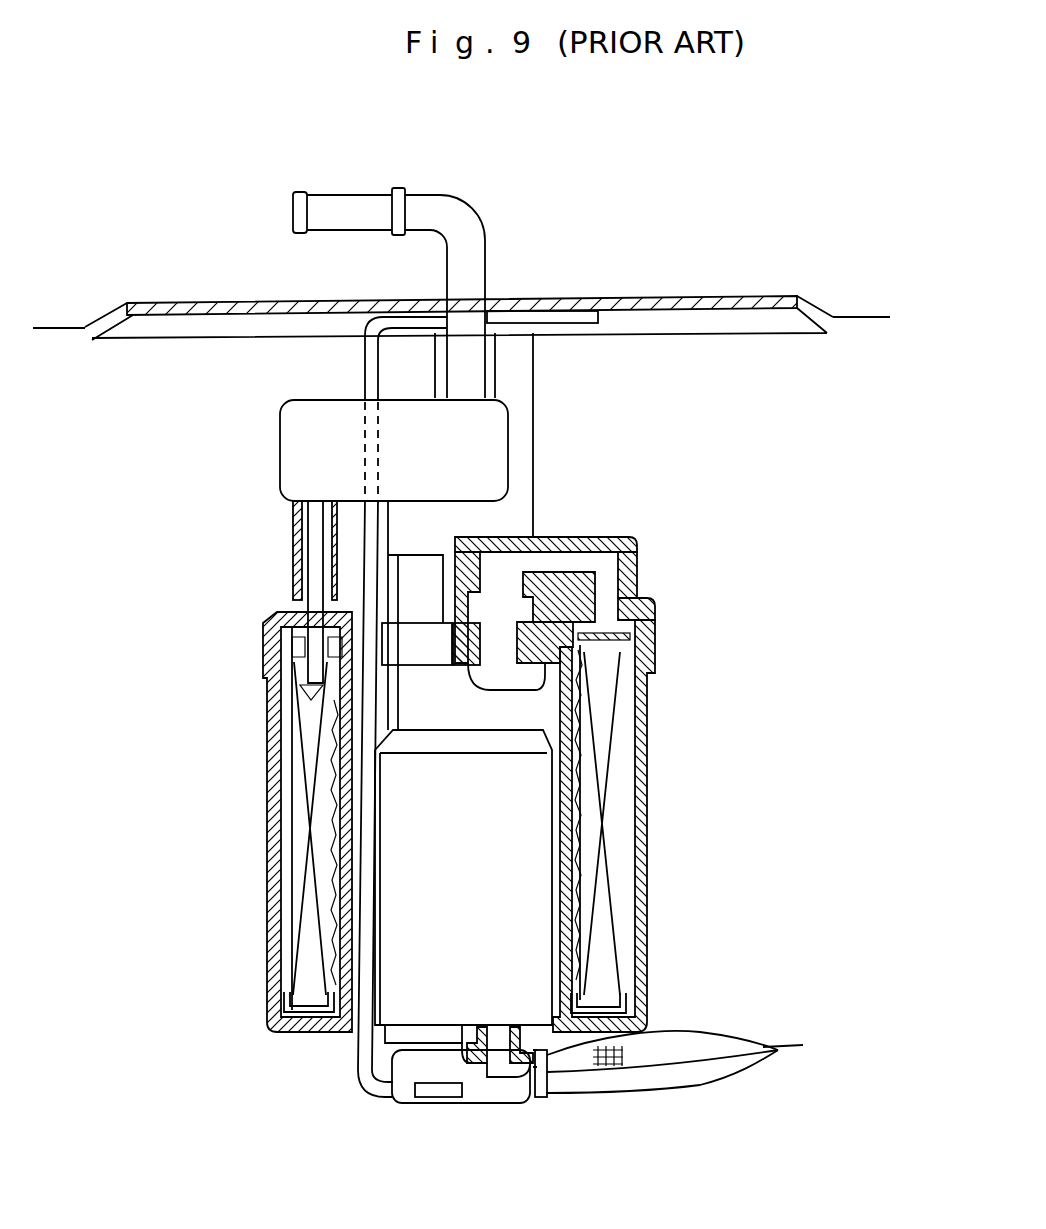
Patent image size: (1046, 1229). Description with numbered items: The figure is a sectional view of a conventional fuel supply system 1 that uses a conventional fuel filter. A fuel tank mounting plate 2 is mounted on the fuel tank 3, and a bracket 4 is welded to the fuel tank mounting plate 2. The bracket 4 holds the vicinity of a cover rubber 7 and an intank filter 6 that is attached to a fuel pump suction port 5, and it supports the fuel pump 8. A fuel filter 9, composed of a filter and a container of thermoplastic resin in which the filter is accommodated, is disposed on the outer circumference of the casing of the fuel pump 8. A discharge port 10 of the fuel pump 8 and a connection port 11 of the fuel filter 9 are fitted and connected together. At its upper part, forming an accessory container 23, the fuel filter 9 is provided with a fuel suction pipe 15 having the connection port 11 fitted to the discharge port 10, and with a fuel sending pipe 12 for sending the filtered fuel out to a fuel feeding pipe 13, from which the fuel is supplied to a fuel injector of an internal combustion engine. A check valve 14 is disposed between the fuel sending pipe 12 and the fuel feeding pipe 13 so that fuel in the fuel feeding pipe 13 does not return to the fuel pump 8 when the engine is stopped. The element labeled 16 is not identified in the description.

The fuel supply system 1 is at (543, 186).
The fuel tank mounting plate 2 is at (588, 298).
The fuel tank 3 is at (843, 316).
The bracket 4 is at (372, 363).
The fuel pump suction port 5 is at (500, 1060).
The intank filter 6 is at (680, 1052).
The cover rubber 7 is at (473, 1087).
The fuel pump 8 is at (505, 953).
The fuel filter 9 is at (653, 788).
The discharge port 10 is at (640, 603).
The connection port 11 is at (548, 598).
The fuel sending pipe 12 is at (312, 574).
The fuel feeding pipe 13 is at (426, 224).
The check valve 14 is at (302, 446).
The fuel suction pipe 15 is at (555, 557).
The filter housing 16 is at (268, 806).
The accessory container 23 is at (640, 548).